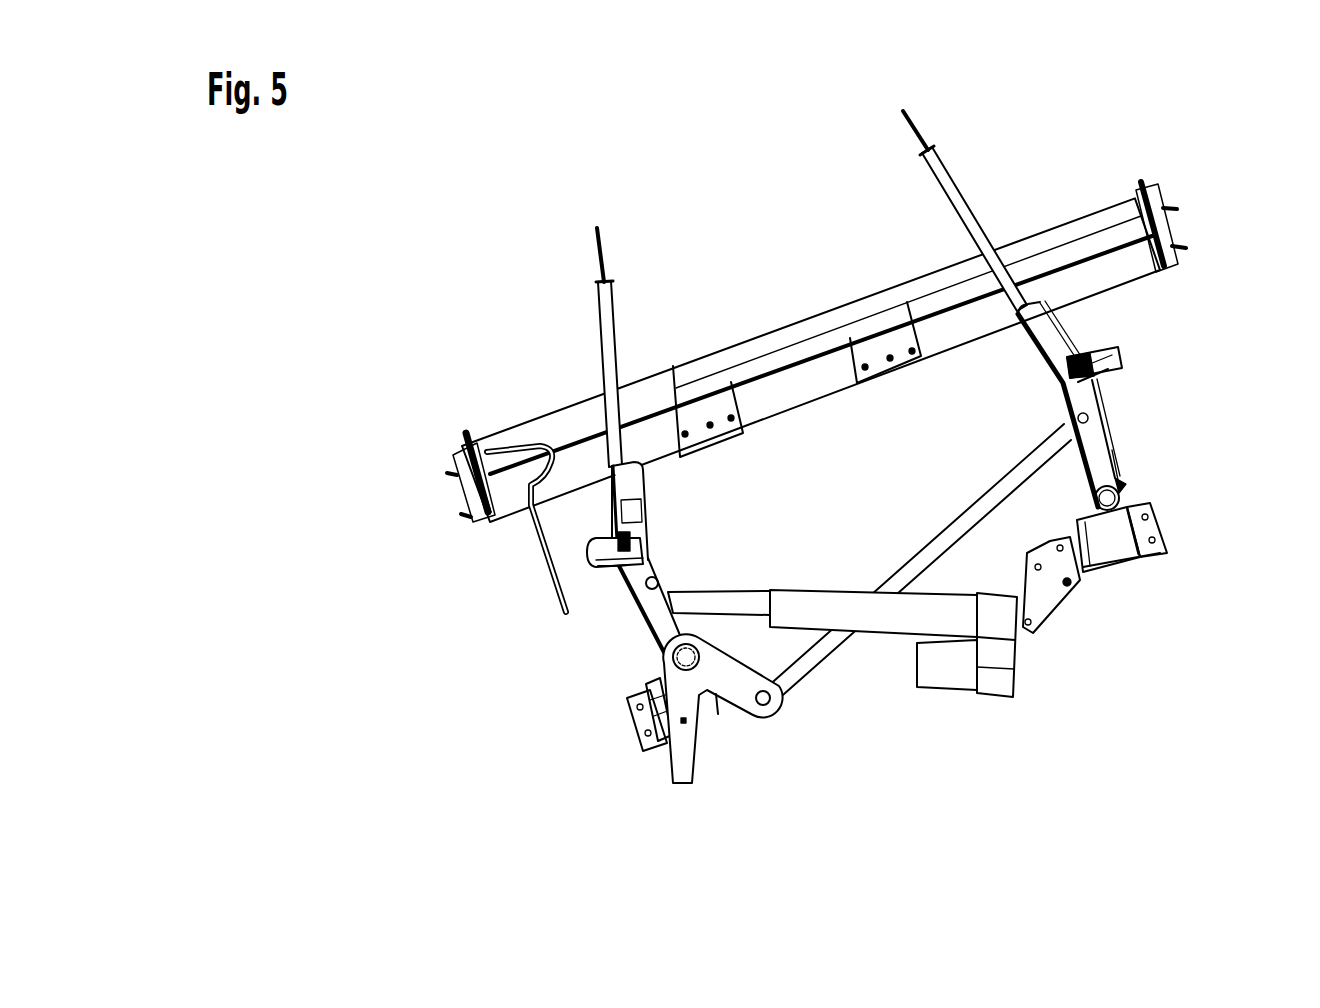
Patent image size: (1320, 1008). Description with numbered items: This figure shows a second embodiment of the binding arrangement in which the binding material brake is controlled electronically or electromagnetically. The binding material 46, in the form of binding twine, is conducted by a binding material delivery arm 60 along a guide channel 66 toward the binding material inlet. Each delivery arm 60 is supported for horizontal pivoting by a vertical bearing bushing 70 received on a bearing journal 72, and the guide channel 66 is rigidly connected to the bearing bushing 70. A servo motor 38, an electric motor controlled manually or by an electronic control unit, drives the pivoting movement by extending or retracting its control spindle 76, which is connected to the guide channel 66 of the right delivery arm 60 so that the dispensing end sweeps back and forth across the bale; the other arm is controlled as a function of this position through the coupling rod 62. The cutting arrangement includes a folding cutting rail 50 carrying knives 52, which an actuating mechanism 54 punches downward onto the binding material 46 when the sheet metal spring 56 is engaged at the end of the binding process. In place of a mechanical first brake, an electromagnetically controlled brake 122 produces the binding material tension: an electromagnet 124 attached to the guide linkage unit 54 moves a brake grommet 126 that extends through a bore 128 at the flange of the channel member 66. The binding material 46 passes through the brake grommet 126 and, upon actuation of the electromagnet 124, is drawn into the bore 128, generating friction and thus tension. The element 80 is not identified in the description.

The servo motor 38 is at (912, 620).
The binding material 46 is at (597, 240).
The cutting rail 50 is at (540, 418).
The knives 52 is at (721, 420).
The actuating mechanism 54 is at (455, 458).
The sheet metal spring 56 is at (595, 572).
The binding material delivery arm 60 is at (1100, 470).
The coupling rod 62 is at (820, 650).
The guide channel 66 is at (1115, 455).
The bearing bushing 70 is at (1100, 527).
The bearing journal 72 is at (640, 740).
The control spindle 76 is at (722, 600).
The sleeve 80 is at (596, 314).
The electromagnetically controlled brake 122 is at (588, 548).
The electromagnet 124 is at (598, 575).
The brake grommet 126 is at (612, 580).
The bore 128 is at (600, 580).